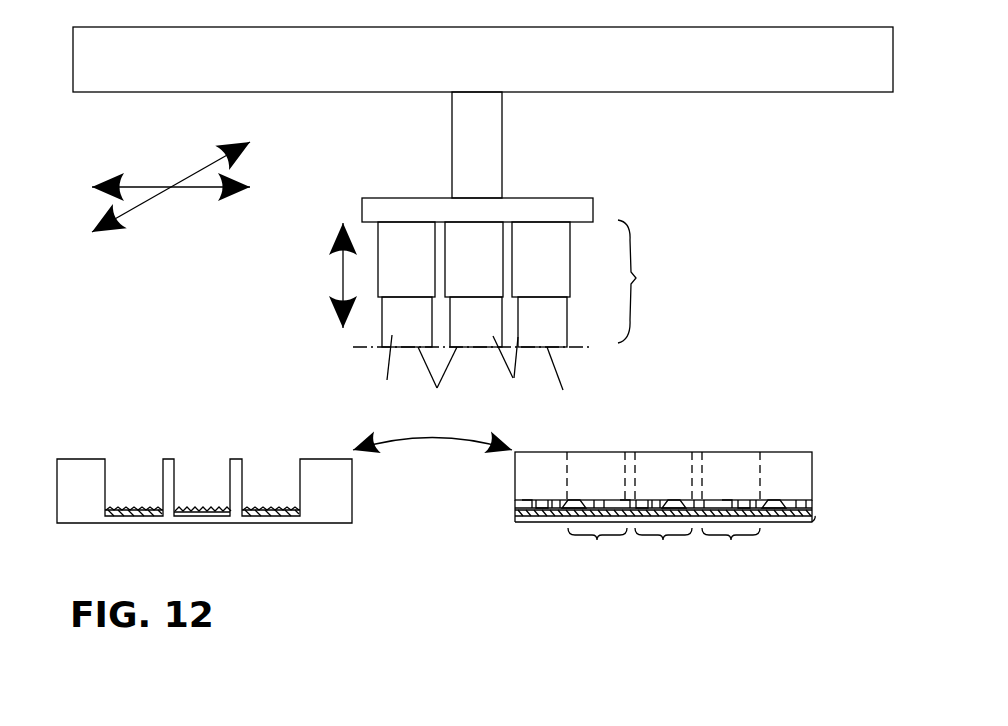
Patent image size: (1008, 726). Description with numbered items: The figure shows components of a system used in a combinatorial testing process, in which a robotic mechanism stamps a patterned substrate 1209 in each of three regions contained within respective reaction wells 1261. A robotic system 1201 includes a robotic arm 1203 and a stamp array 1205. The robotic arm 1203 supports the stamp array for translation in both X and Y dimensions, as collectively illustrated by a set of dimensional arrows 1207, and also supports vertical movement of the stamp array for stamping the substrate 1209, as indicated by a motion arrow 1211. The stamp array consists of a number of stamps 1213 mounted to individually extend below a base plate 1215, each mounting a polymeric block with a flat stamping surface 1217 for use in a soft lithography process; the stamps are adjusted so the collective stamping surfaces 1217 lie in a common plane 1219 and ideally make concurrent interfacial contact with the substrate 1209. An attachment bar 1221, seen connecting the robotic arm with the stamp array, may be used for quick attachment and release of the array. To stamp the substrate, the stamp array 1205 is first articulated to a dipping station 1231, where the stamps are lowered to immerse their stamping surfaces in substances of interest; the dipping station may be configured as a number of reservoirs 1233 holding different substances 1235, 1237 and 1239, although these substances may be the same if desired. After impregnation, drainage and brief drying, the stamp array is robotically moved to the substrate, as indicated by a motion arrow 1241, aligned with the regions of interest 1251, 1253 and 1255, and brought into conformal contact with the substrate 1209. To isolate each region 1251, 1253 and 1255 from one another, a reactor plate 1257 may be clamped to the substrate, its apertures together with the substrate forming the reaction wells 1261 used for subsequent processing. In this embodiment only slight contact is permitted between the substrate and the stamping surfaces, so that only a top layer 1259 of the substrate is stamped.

The robotic system 1201 is at (712, 186).
The robotic arm 1203 is at (168, 92).
The stamp array 1205 is at (539, 283).
The dimensional arrows 1207 is at (207, 190).
The substrate 1209 is at (517, 517).
The motion arrow 1211 is at (342, 267).
The stamps 1213 is at (452, 369).
The base plate 1215 is at (603, 180).
The stamping surface 1217 is at (518, 380).
The common plane 1219 is at (360, 347).
The attachment bar 1221 is at (452, 150).
The dipping station 1231 is at (90, 459).
The reservoirs 1233 is at (242, 520).
The substance 1235 is at (125, 510).
The substance 1237 is at (192, 510).
The substance 1239 is at (252, 510).
The motion arrow 1241 is at (448, 439).
The region of interest 1251 is at (597, 547).
The region of interest 1253 is at (664, 547).
The region of interest 1255 is at (733, 547).
The reactor plate 1257 is at (513, 476).
The top layer 1259 is at (817, 500).
The reaction wells 1261 is at (610, 453).